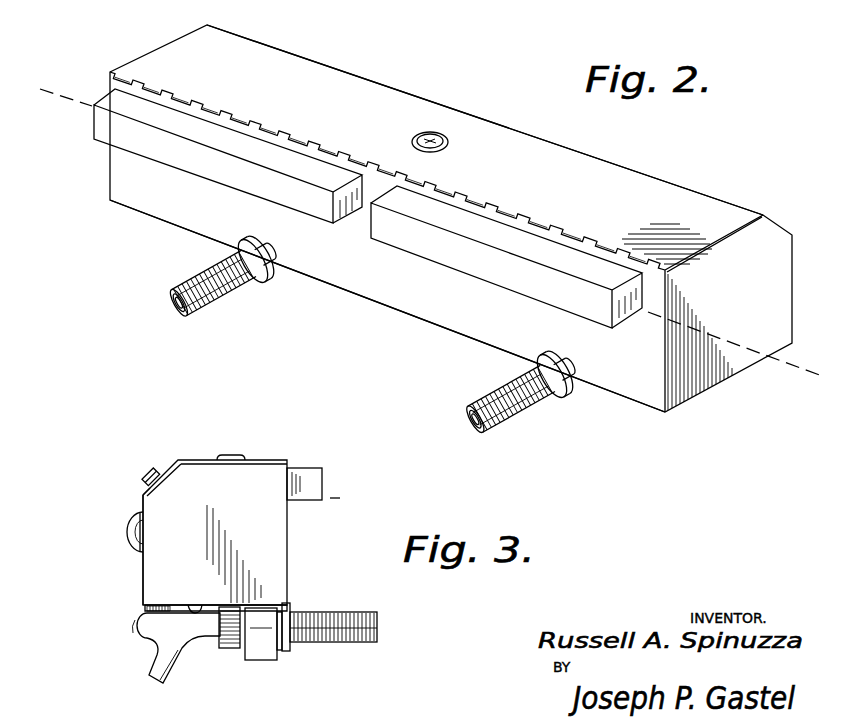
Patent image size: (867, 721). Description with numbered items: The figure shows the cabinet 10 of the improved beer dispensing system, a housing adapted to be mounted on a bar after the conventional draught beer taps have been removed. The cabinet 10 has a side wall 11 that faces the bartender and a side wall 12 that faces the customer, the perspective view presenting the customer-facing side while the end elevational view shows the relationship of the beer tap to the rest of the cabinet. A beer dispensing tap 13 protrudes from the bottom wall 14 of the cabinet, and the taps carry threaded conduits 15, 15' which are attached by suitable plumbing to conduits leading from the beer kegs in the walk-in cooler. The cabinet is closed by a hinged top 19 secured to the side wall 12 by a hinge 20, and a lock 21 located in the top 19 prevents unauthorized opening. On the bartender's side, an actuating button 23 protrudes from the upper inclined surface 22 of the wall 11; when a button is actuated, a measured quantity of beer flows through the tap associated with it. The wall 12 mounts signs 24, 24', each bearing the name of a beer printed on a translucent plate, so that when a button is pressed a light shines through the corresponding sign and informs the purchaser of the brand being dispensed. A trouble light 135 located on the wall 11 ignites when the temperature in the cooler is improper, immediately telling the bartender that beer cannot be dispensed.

In FIG. 2, the cabinet 10 is at (706, 184).
In FIG. 3, the cabinet 10 is at (290, 577).
In FIG. 3, the side wall 11 is at (142, 583).
In FIG. 2, the side wall 12 is at (392, 306).
In FIG. 3, the side wall 12 is at (290, 515).
In FIG. 3, the beer dispensing tap 13 is at (167, 672).
In FIG. 3, the bottom wall 14 is at (194, 605).
In FIG. 2, the threaded conduit 15 is at (224, 283).
In FIG. 3, the threaded conduit 15 is at (298, 646).
In FIG. 2, the threaded conduit 15' is at (521, 395).
In FIG. 2, the hinged top 19 is at (293, 66).
In FIG. 2, the hinge 20 is at (544, 221).
In FIG. 2, the lock 21 is at (416, 135).
In FIG. 3, the lock 21 is at (232, 456).
In FIG. 3, the upper inclined surface 22 is at (143, 490).
In FIG. 3, the actuating button 23 is at (148, 474).
In FIG. 2, the sign 24 is at (228, 156).
In FIG. 2, the sign 24' is at (506, 257).
In FIG. 3, the trouble light 135 is at (128, 533).